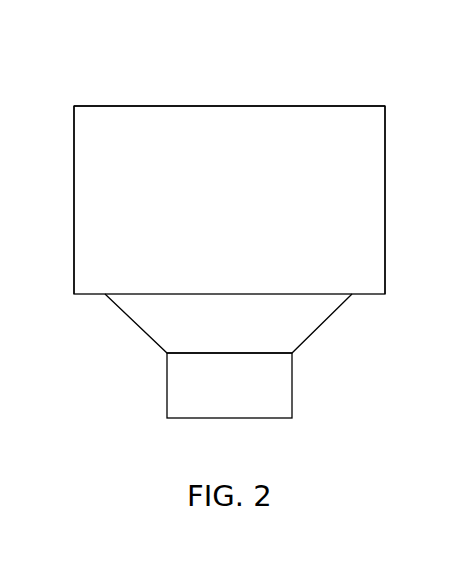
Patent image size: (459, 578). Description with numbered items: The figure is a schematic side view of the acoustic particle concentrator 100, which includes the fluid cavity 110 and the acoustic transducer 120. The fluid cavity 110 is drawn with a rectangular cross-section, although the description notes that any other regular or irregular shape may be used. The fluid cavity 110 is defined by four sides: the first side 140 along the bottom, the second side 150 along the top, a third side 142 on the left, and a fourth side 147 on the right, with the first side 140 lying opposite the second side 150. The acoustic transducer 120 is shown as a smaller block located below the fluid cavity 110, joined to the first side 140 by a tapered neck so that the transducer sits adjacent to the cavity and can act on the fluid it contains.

The acoustic particle concentrator 100 is at (251, 226).
The fluid cavity 110 is at (128, 106).
The second side 150 is at (225, 105).
The third side 142 is at (76, 230).
The fourth side 147 is at (383, 228).
The first side 140 is at (150, 296).
The acoustic transducer 120 is at (167, 387).